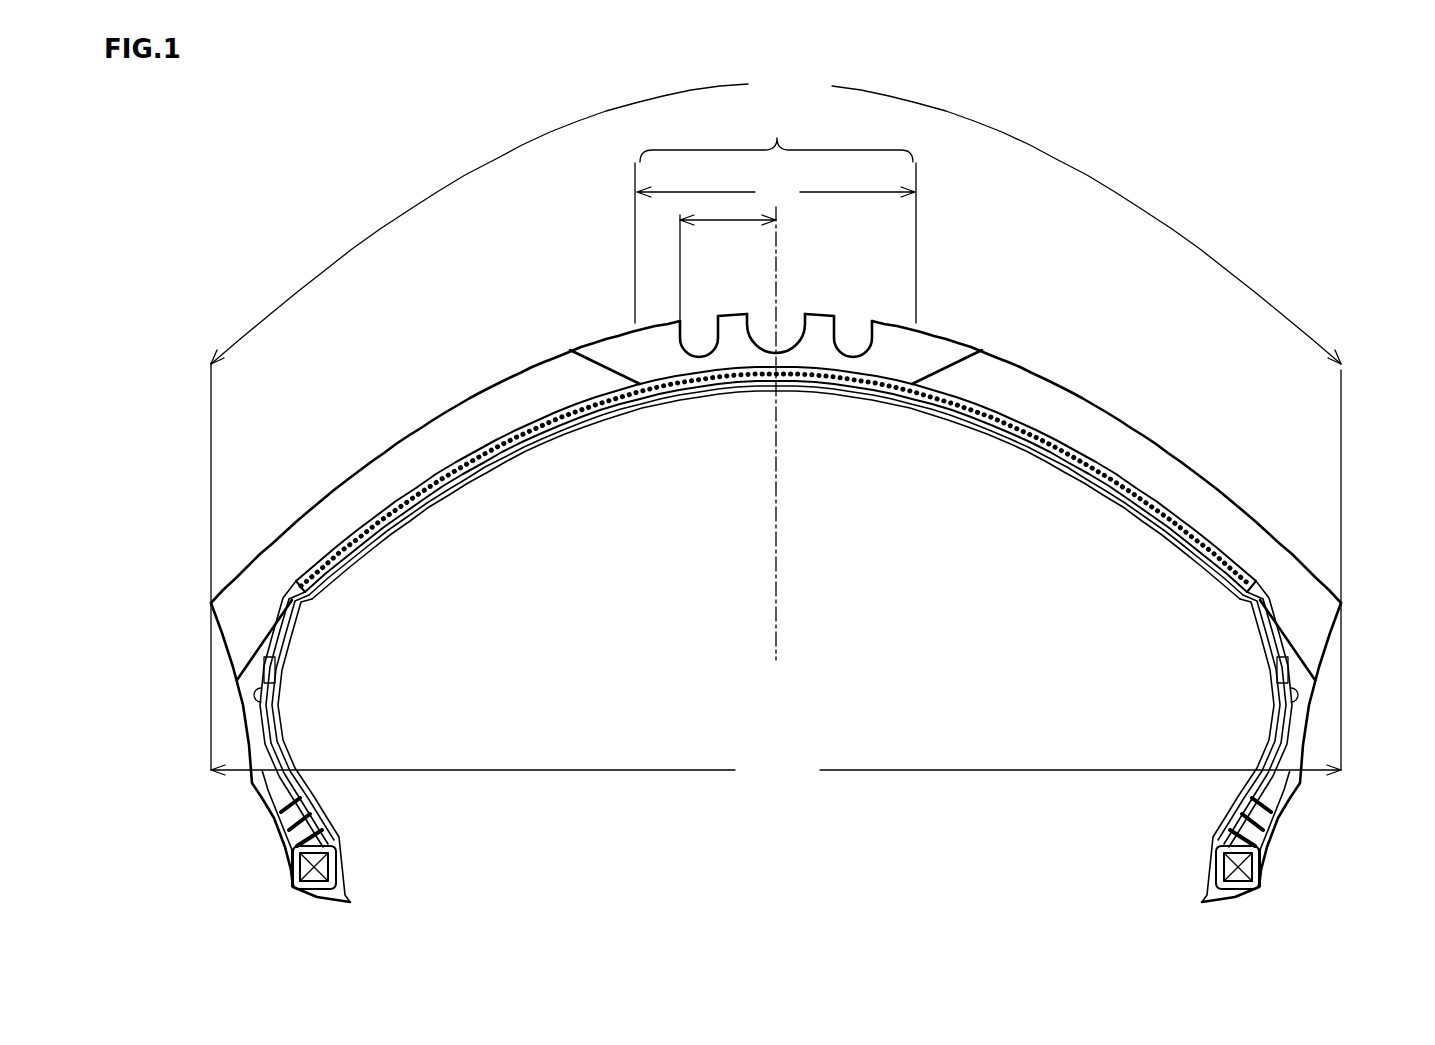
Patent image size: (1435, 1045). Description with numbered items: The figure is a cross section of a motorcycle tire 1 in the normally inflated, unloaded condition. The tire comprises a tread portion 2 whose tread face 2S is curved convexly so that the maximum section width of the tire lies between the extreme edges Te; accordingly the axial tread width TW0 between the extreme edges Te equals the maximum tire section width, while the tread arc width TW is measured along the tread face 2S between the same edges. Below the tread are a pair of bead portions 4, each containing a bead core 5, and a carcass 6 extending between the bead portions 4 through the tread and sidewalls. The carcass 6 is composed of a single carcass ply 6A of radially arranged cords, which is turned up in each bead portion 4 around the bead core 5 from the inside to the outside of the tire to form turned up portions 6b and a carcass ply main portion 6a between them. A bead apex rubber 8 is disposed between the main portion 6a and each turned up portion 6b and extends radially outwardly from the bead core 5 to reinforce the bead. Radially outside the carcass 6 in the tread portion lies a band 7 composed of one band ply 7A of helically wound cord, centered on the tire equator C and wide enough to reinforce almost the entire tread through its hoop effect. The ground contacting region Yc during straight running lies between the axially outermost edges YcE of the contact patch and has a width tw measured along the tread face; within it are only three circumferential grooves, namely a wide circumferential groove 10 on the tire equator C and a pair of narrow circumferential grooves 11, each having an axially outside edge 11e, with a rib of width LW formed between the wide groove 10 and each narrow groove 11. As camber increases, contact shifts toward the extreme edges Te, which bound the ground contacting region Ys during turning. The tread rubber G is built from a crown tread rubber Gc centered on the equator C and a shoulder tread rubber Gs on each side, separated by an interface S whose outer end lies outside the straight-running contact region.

The motorcycle tire 1 is at (1311, 279).
The tread face 2S is at (776, 645).
The tread portion 2 is at (1225, 497).
The bead portions 4 is at (1185, 857).
The bead core 5 is at (1252, 885).
The carcass ply 6A is at (773, 644).
The carcass 6 is at (1160, 664).
The carcass ply main portion 6a is at (1280, 720).
The turned up portions 6b is at (1284, 675).
The band 7 is at (776, 487).
The band ply 7A is at (1093, 458).
The bead apex rubber 8 is at (1252, 822).
The wide circumferential groove 10 is at (797, 323).
The narrow circumferential grooves 11 is at (712, 325).
The axially outside edge of narrow circumferential groove 11e is at (680, 287).
The crown tread rubber Gc is at (836, 308).
The tread rubber G is at (928, 342).
The shoulder tread rubber Gs is at (510, 393).
The interface between crown tread rubber and shoulder tread rubber S is at (596, 365).
The extreme edges Te is at (208, 598).
The tread arc width TW is at (776, 216).
The axial tread width TW0 is at (776, 770).
The ground contacting region Yc is at (776, 133).
The axial outermost edges of ground contacting patch YcE is at (635, 245).
The ground contacting region during turning Ys is at (368, 416).
The width of ground contacting region tw is at (776, 179).
The rib width LW is at (728, 206).
The tire equator C is at (785, 582).